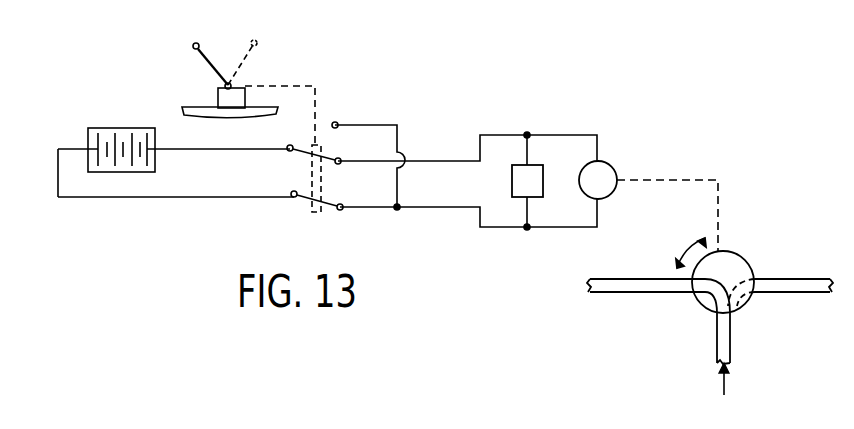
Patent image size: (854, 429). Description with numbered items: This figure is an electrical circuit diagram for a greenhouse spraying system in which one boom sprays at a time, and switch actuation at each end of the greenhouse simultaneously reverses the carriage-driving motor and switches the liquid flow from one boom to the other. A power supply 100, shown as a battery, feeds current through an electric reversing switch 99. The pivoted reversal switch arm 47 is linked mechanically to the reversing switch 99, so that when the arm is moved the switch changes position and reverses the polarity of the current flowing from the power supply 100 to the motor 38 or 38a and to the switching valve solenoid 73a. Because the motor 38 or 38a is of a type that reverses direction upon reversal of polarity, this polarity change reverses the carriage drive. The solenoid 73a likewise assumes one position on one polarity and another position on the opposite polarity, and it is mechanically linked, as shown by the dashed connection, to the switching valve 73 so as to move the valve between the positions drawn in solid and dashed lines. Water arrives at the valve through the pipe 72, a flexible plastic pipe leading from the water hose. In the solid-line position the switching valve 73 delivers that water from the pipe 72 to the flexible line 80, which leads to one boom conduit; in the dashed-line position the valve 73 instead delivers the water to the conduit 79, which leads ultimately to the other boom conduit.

The power supply 100 is at (128, 128).
The pivoted reversal switch arm 47 is at (204, 63).
The electric reversing switch 99 is at (320, 212).
The motor 38 is at (572, 151).
The motor 38a is at (535, 165).
The solenoid 73a is at (615, 176).
The switching valve 73 is at (738, 255).
The flexible line 80 is at (652, 288).
The conduit 79 is at (802, 287).
The pipe 72 is at (718, 347).